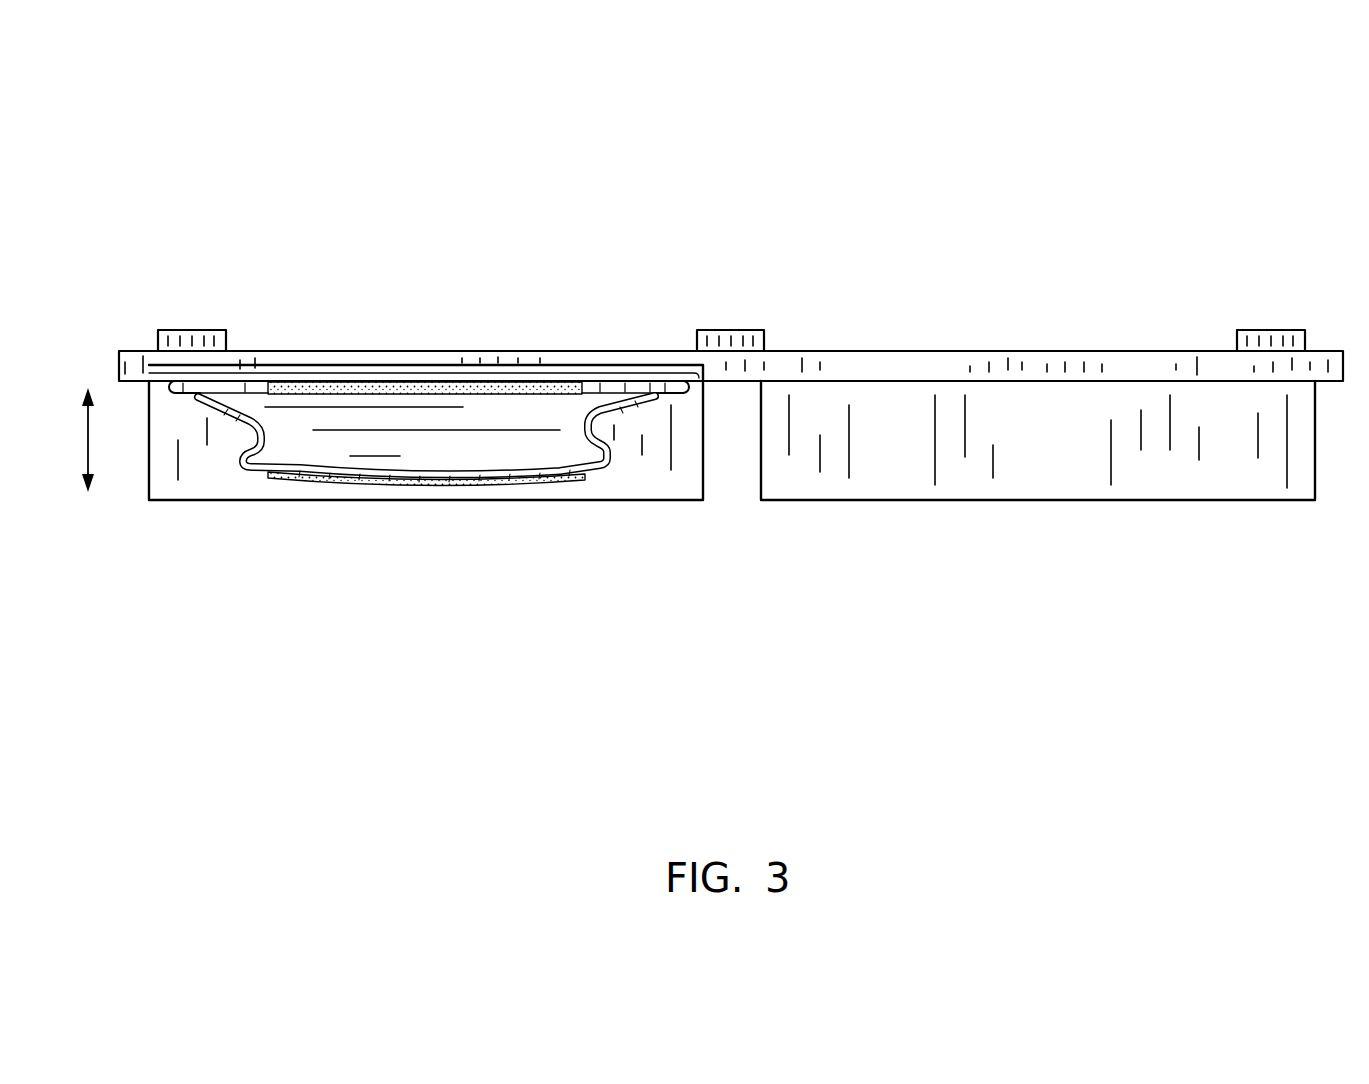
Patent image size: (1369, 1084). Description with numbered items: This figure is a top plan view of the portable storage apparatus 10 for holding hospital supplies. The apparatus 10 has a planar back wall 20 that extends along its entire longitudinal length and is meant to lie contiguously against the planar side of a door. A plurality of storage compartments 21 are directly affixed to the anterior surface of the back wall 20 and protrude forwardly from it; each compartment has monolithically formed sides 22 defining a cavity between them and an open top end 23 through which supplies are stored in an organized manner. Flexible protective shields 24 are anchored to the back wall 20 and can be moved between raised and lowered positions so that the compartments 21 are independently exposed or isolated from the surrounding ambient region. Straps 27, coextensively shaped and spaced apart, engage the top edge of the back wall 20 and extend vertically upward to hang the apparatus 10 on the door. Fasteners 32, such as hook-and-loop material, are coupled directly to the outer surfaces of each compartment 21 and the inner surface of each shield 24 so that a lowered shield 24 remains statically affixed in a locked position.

The portable storage apparatus 10 is at (638, 188).
The back wall 20 is at (845, 362).
The storage compartments 21 is at (318, 517).
The sides 22 is at (255, 432).
The open top end 23 is at (472, 450).
The flexible protective shields 24 is at (975, 475).
The straps 27 is at (185, 342).
The fasteners 32 is at (400, 385).